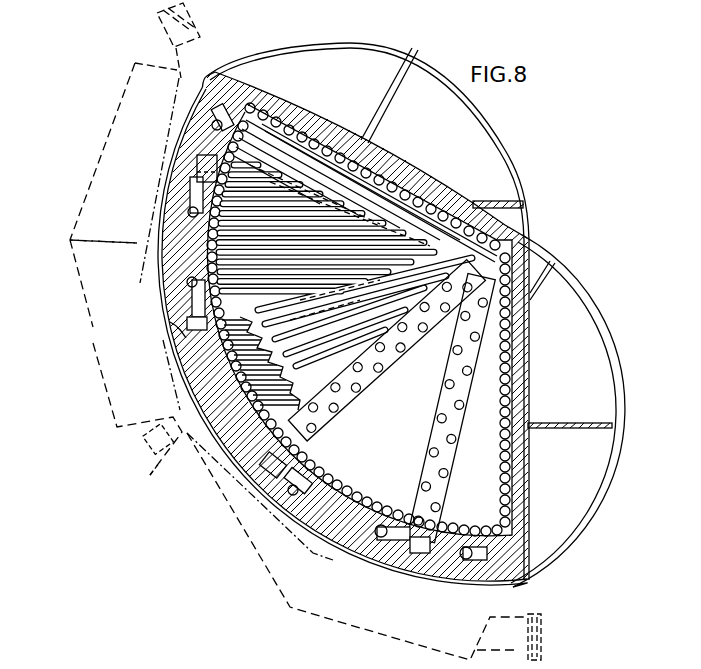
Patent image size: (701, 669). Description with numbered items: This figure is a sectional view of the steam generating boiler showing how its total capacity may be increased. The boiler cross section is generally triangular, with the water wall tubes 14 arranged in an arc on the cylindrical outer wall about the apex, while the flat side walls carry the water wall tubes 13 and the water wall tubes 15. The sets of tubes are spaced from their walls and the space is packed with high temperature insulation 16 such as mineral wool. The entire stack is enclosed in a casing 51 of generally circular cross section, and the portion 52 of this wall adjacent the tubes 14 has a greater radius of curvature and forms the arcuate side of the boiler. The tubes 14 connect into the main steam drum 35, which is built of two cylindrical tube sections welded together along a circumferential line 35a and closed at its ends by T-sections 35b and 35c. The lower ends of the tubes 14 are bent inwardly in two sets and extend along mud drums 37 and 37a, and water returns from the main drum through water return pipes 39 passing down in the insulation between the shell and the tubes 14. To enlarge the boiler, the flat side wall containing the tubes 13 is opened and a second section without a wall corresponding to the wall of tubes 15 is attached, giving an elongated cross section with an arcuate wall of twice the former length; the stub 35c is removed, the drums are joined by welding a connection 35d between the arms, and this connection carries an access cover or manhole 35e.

The water wall tubes 13 is at (500, 469).
The water wall tubes 14 is at (380, 193).
The water wall tubes 15 is at (318, 135).
The high temperature insulation 16 is at (297, 108).
The main steam drum 35 is at (93, 336).
The circumferential line 35a is at (80, 233).
The T-section 35b is at (135, 57).
The T-section 35c is at (506, 647).
The connection 35d is at (143, 448).
The access cover 35e is at (138, 457).
The mud drum 37 is at (186, 322).
The mud drum 37a is at (200, 162).
The water return pipes 39 is at (222, 112).
The casing 51 is at (378, 47).
The arcuate wall portion 52 is at (173, 328).